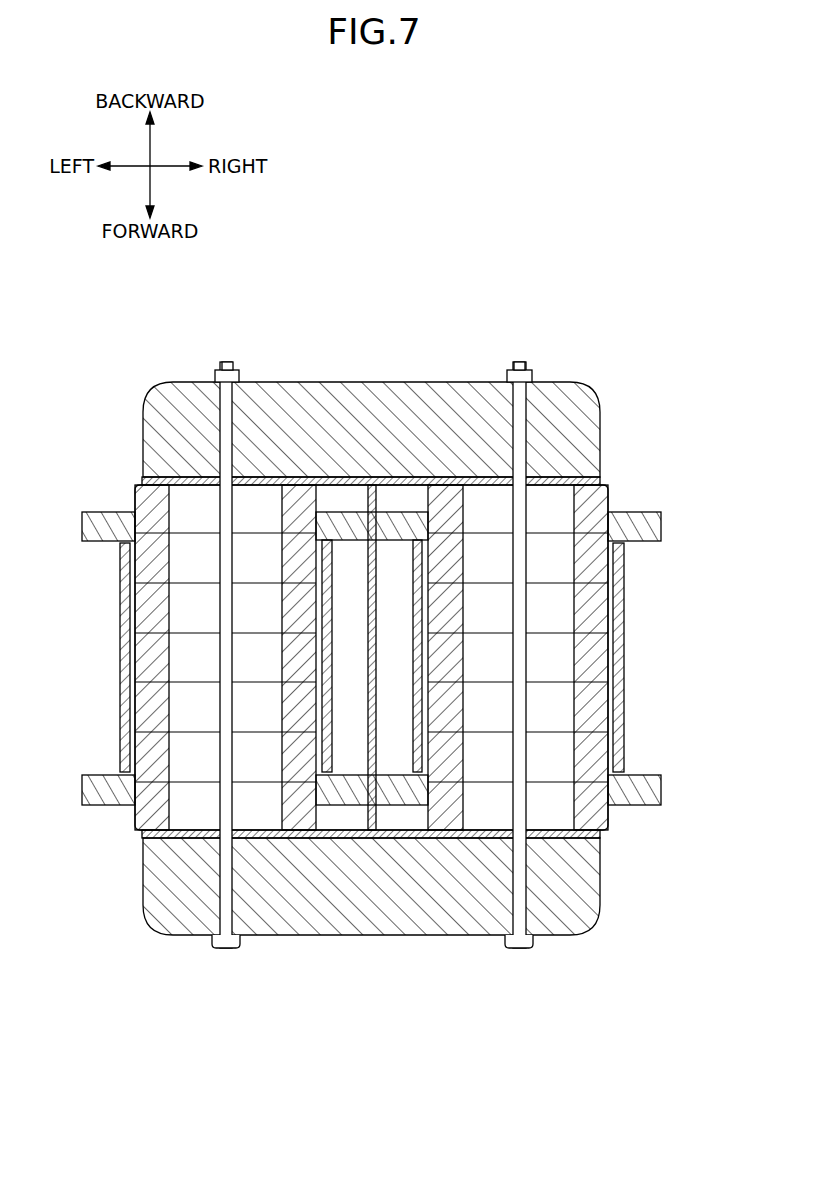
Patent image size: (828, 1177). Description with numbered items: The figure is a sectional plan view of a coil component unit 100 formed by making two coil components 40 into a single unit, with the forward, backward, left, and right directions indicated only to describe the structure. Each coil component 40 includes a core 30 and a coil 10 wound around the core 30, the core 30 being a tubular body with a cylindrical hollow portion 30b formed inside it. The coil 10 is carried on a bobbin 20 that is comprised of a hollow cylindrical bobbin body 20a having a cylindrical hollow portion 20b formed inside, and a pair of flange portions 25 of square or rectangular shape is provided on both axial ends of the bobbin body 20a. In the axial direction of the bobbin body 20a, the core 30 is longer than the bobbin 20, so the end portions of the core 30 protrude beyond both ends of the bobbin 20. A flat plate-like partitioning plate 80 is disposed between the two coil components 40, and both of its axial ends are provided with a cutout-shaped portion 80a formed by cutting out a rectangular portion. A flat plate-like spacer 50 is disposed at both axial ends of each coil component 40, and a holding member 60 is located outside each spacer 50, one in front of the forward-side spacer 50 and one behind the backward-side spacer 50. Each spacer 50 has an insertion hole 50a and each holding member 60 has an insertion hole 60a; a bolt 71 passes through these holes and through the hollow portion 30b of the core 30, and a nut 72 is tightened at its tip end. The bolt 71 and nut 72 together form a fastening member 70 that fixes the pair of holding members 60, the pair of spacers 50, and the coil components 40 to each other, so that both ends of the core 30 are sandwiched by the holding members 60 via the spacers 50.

The coil component unit 100 is at (357, 243).
The coil 10 is at (125, 583).
The bobbin 20 is at (135, 655).
The bobbin body 20a is at (135, 622).
The hollow portion 20b is at (150, 692).
The flange portion 25 is at (92, 525).
The core 30 is at (142, 818).
The hollow portion 30b is at (165, 752).
The coil component 40 is at (108, 560).
The spacer 50 is at (560, 478).
The insertion hole 50a is at (226, 484).
The holding member 60 is at (472, 395).
The insertion hole 60a is at (226, 438).
The fastening member 70 is at (214, 888).
The bolt 71 is at (160, 920).
The nut 72 is at (216, 370).
The partitioning plate 80 is at (384, 500).
The cutout-shaped portion 80a is at (368, 488).